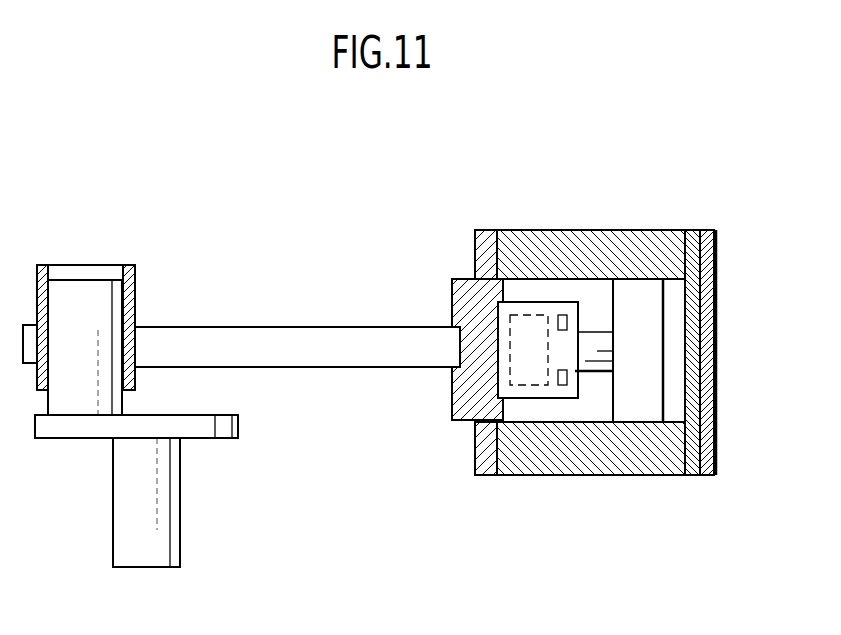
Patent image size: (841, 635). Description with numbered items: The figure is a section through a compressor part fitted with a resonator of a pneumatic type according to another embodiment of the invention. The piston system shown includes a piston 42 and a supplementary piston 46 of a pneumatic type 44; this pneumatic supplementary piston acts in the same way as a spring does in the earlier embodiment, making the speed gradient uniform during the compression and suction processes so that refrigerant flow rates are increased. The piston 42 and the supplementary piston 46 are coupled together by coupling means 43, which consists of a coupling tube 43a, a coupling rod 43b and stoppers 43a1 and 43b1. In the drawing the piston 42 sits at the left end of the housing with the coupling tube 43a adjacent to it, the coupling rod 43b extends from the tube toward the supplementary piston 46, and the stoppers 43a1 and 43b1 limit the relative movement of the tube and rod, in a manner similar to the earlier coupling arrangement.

The piston 42 is at (483, 307).
The coupling means 43 is at (564, 379).
The coupling tube 43a is at (532, 390).
The stopper 43a1 is at (551, 322).
The coupling rod 43b is at (593, 355).
The stopper 43b1 is at (572, 323).
The pneumatic type 44 is at (519, 322).
The supplementary piston 46 is at (645, 352).